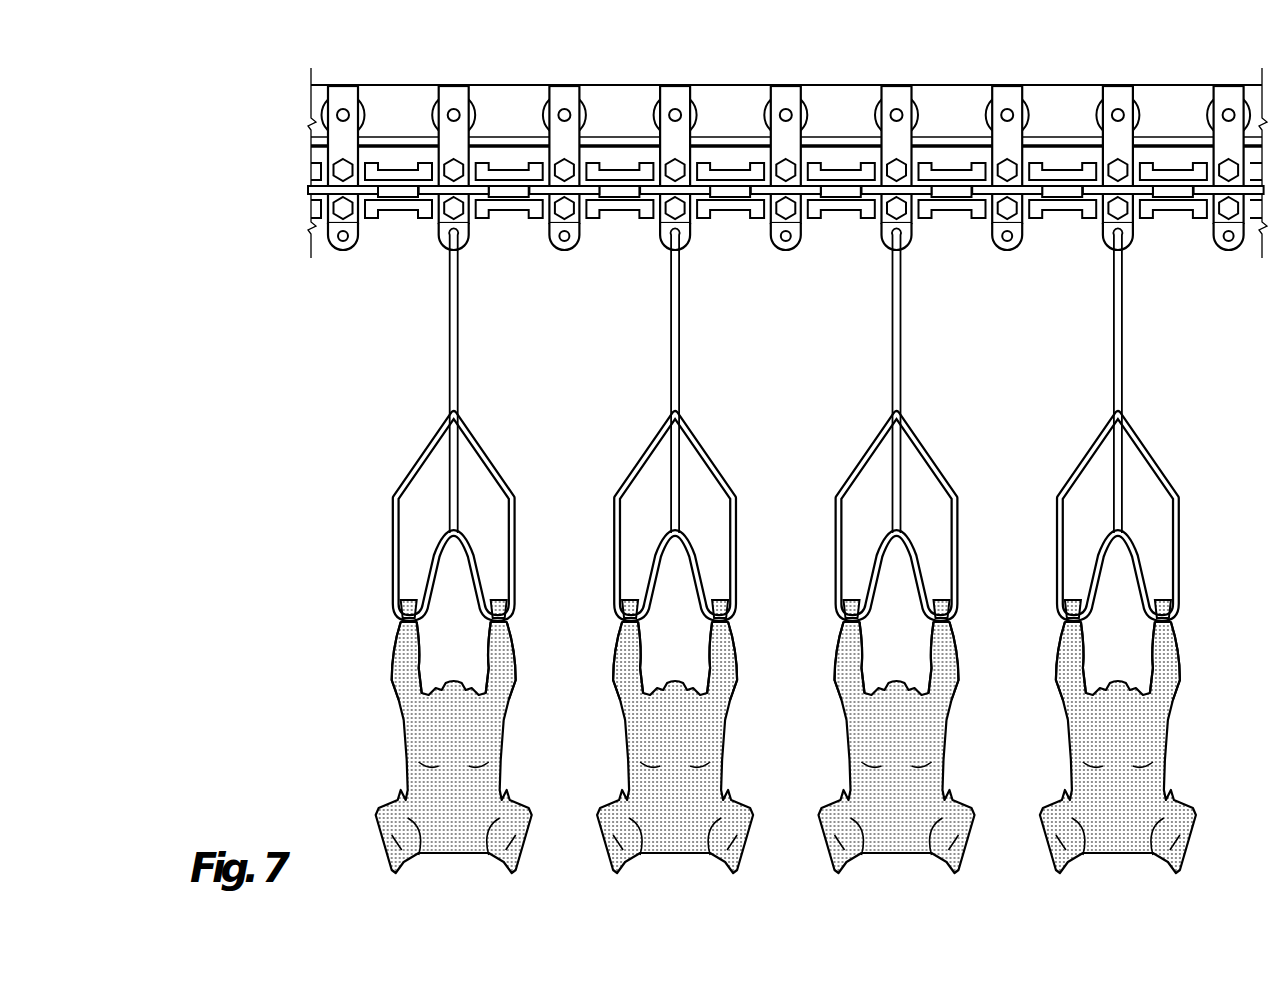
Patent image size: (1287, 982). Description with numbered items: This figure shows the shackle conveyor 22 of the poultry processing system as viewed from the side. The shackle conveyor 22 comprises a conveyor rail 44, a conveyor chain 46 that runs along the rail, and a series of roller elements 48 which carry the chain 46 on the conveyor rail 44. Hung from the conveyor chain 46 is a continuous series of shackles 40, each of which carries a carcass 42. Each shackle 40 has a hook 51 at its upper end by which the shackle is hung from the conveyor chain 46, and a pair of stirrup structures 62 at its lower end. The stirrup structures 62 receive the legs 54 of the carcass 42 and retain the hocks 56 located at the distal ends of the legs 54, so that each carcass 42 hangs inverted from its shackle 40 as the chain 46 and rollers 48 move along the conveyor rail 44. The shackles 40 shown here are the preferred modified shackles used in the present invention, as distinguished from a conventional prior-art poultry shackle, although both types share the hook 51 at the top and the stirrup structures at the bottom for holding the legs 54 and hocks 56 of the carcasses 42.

The shackle conveyor 22 is at (787, 166).
The shackle 40 is at (418, 452).
The carcass 42 is at (435, 737).
The conveyor rail 44 is at (1173, 143).
The conveyor chain 46 is at (615, 212).
The roller element 48 is at (432, 103).
The hook 51 is at (447, 247).
The leg 54 is at (403, 665).
The hock 56 is at (405, 596).
The stirrup structure 62 is at (400, 617).